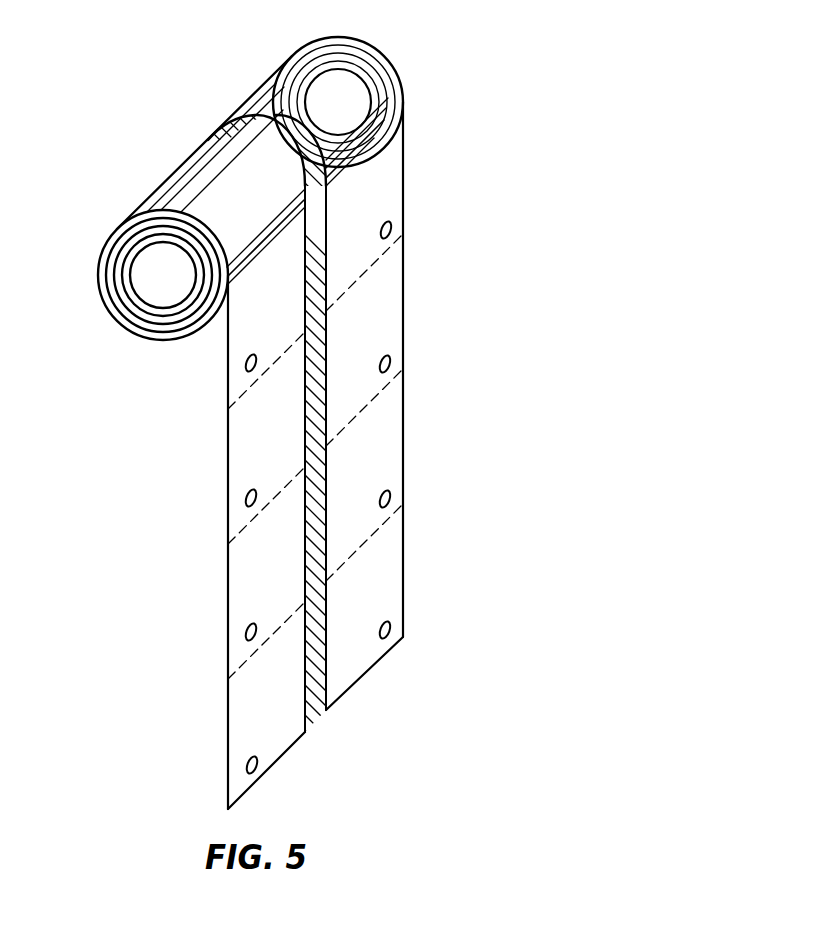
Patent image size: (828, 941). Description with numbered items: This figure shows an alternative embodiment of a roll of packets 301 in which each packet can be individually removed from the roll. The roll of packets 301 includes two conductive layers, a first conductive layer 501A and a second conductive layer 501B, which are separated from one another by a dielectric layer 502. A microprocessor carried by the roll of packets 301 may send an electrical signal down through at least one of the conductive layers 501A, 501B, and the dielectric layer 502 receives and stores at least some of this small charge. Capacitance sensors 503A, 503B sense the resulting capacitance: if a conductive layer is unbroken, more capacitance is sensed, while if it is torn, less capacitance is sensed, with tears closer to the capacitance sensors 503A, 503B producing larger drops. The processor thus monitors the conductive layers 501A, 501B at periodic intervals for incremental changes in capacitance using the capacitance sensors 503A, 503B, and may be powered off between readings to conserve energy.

The roll of packets 301 is at (163, 279).
The first conductive layer 501A is at (260, 328).
The second conductive layer 501B is at (392, 195).
The dielectric layer 502 is at (322, 270).
The capacitance sensor 503A is at (256, 364).
The capacitance sensor 503B is at (393, 231).